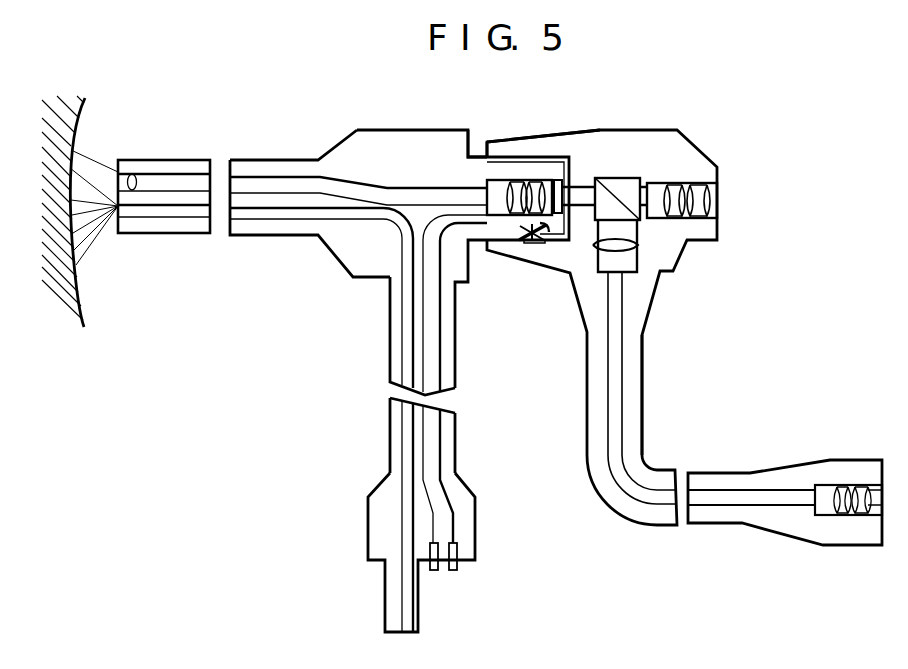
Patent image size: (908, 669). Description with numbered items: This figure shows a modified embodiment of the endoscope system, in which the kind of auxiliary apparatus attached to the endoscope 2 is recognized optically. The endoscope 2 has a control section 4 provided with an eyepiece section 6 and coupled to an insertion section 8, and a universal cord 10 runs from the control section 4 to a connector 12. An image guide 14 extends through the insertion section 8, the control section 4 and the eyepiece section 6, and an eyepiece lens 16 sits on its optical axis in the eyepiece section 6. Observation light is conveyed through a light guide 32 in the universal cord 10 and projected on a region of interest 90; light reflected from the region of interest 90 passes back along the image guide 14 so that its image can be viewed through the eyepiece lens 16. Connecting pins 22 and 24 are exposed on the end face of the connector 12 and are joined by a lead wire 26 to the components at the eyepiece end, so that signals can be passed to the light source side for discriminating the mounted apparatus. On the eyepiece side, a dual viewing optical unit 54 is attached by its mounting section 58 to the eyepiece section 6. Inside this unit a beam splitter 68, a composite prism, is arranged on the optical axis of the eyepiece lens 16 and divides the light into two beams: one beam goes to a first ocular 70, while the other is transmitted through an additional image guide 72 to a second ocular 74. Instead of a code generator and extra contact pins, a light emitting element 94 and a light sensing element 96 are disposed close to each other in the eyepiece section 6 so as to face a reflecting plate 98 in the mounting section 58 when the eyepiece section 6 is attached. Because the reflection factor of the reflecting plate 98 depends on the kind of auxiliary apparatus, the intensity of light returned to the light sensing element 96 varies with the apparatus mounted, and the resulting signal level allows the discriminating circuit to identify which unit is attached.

The endoscope 2 is at (352, 274).
The control section 4 is at (397, 130).
The eyepiece section 6 is at (478, 157).
The insertion section 8 is at (268, 160).
The universal cord 10 is at (457, 368).
The connector 12 is at (374, 522).
The image guide 14 is at (161, 186).
The eyepiece lens 16 is at (525, 185).
The connecting pin 22 is at (434, 571).
The connecting pin 24 is at (441, 451).
The lead wire 26 is at (424, 431).
The light guide 32 is at (403, 447).
The dual viewing optical unit 54 is at (648, 322).
The mounting section 58 is at (513, 142).
The beam splitter 68 is at (625, 190).
The first ocular 70 is at (690, 190).
The additional image guide 72 is at (615, 413).
The second ocular 74 is at (847, 497).
The region of interest 90 is at (84, 310).
The light emitting element 94 is at (545, 230).
The light sensing element 96 is at (518, 236).
The reflecting plate 98 is at (531, 243).